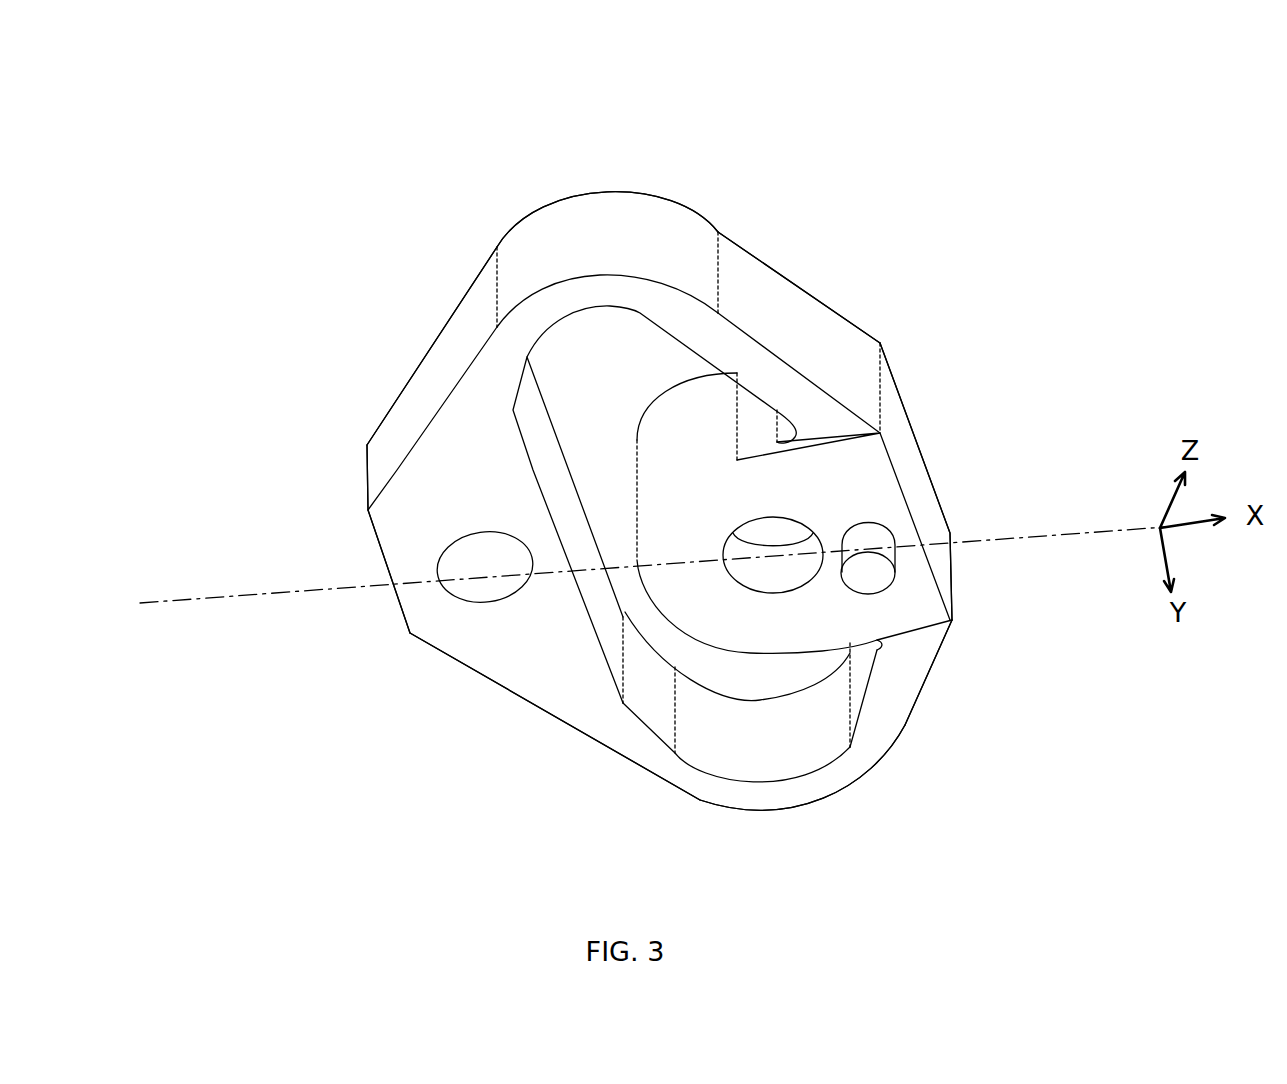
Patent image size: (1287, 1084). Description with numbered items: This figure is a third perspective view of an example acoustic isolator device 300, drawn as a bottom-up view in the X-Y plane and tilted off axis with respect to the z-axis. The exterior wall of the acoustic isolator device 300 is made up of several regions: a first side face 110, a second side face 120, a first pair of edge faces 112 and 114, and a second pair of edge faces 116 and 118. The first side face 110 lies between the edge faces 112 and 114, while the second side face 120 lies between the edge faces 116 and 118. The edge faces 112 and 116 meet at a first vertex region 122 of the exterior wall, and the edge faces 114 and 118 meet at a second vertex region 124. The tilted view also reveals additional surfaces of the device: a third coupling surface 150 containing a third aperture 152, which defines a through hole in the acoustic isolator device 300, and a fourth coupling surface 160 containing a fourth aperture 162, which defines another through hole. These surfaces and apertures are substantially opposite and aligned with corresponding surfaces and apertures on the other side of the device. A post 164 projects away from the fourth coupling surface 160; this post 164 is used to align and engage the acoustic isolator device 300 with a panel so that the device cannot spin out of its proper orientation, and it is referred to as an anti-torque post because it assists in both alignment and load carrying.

The acoustic isolator device 300 is at (1141, 94).
The first side face 110 is at (372, 578).
The edge face 112 is at (507, 729).
The edge face 114 is at (423, 361).
The edge face 116 is at (942, 730).
The edge face 118 is at (809, 302).
The second side face 120 is at (932, 492).
The first vertex region 122 is at (789, 849).
The second vertex region 124 is at (609, 221).
The third coupling surface 150 is at (408, 507).
The third aperture 152 is at (449, 596).
The fourth coupling surface 160 is at (909, 618).
The fourth aperture 162 is at (821, 519).
The post 164 is at (902, 567).